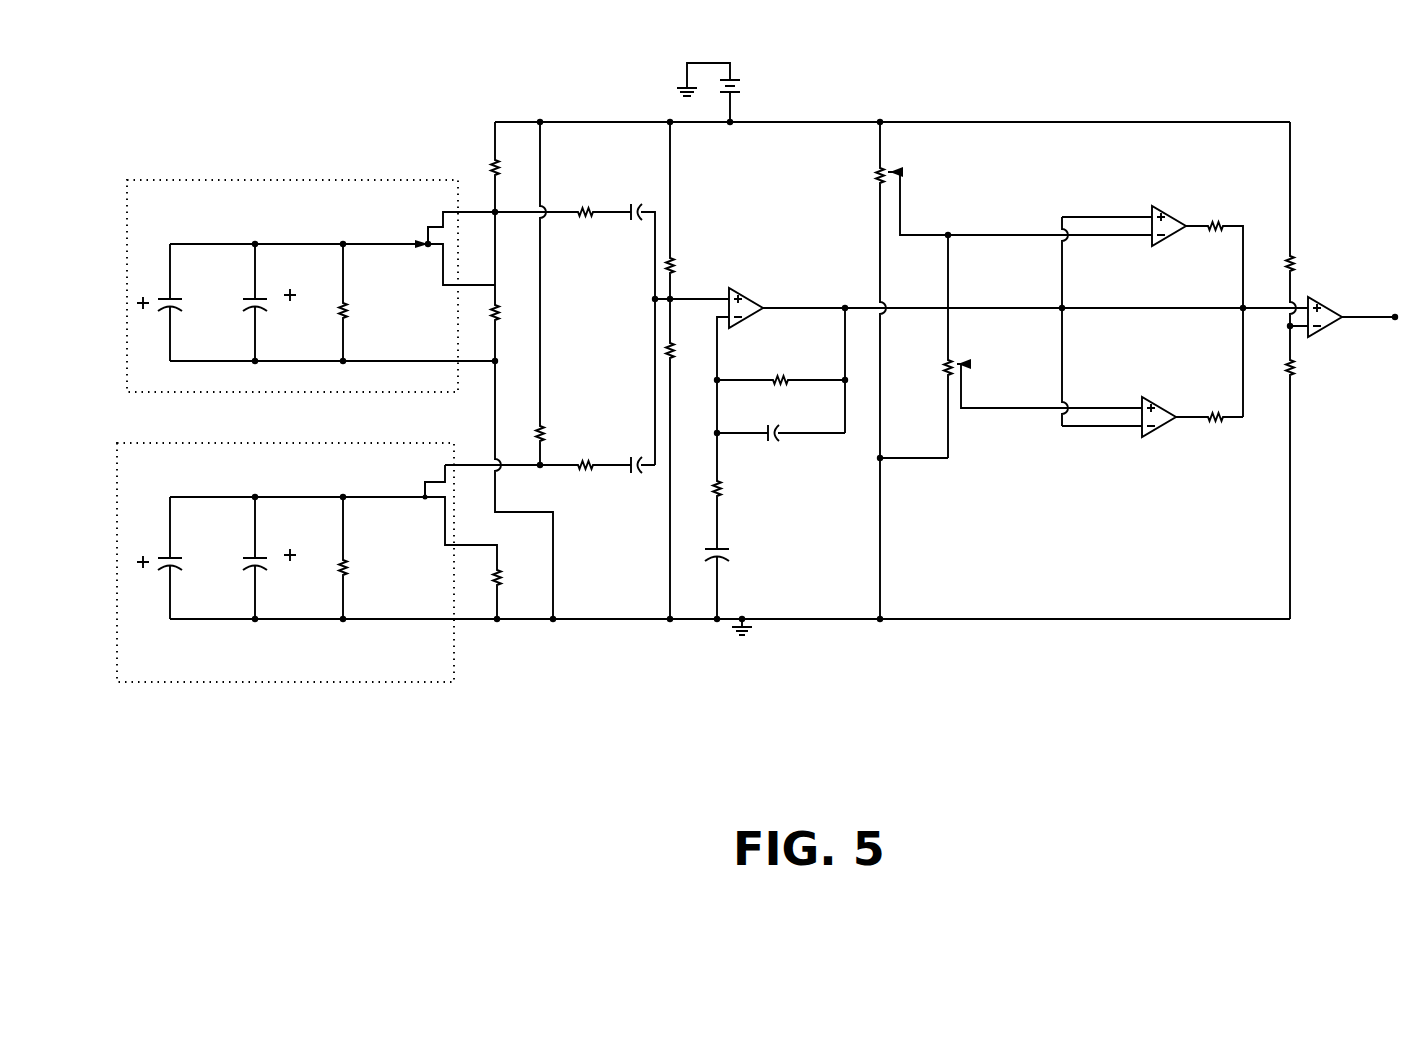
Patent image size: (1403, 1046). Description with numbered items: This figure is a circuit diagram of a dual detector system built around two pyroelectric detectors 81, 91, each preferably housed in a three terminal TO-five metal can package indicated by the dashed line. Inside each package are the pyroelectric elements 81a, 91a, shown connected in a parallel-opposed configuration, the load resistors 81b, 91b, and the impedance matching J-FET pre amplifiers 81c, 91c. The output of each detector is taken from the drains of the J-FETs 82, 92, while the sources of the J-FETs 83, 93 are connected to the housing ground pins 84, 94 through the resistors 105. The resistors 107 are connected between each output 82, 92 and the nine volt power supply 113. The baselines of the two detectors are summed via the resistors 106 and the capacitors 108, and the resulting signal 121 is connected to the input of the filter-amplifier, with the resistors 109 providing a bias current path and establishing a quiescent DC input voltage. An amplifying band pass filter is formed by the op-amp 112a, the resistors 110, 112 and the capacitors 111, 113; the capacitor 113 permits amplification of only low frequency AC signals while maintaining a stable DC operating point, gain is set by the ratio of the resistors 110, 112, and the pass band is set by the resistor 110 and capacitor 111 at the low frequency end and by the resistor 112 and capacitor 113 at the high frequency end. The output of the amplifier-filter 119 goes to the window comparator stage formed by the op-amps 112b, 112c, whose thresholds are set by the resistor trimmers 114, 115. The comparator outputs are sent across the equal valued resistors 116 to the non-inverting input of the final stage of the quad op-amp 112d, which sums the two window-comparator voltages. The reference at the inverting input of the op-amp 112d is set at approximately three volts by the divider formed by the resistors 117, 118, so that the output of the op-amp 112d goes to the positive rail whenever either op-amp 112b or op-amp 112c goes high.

The pyroelectric detector 81 is at (127, 303).
The pyroelectric elements 81a is at (249, 318).
The load resistor 81b is at (372, 296).
The impedance matching J-FET pre amplifier 81c is at (409, 223).
The J-FET drain 82 is at (475, 233).
The J-FET source 83 is at (475, 274).
The TO-5 housing ground pin 84 is at (470, 352).
The pyroelectric detector 91 is at (117, 562).
The pyroelectric elements 91a is at (249, 576).
The load resistor 91b is at (372, 556).
The impedance matching J-FET pre amplifier 91c is at (418, 475).
The J-FET drain 92 is at (470, 486).
The J-FET source 93 is at (479, 531).
The TO-5 housing ground pin 94 is at (478, 602).
The resistors 105 is at (524, 446).
The resistors 106 is at (575, 238).
The resistors 107 is at (490, 298).
The capacitors 108 is at (628, 238).
The resistors 109 is at (680, 262).
The resistor 110 is at (785, 366).
The capacitor 111 is at (785, 417).
The resistor 112 is at (745, 488).
The op-amp 112a is at (768, 296).
The window comparator op-amp 112b is at (1193, 214).
The window comparator op-amp 112c is at (1165, 402).
The quad op-amp final stage 112d is at (1353, 307).
The power supply / capacitor 113 is at (752, 320).
The resistor trimmer 114 is at (919, 175).
The resistor trimmer 115 is at (979, 357).
The equal valued resistors 116 is at (1210, 402).
The resistor 117 is at (1318, 263).
The resistor 118 is at (1318, 367).
The amplifier-filter output 119 is at (971, 295).
The signal 121 is at (692, 286).